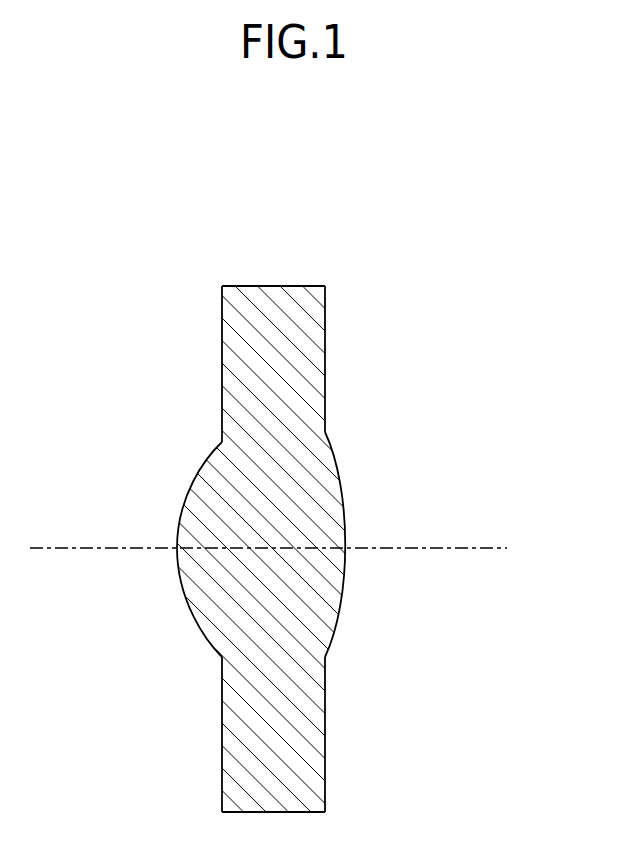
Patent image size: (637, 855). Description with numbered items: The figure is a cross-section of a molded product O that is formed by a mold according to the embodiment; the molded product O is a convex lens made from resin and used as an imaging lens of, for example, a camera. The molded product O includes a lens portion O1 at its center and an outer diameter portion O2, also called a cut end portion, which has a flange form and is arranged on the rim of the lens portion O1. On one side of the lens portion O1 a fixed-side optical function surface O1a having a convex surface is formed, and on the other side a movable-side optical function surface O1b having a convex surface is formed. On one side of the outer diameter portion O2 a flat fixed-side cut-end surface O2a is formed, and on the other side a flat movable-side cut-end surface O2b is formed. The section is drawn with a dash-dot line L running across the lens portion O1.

The molded product O is at (441, 209).
The lens portion O1 is at (369, 518).
The fixed-side optical function surface O1a is at (342, 497).
The movable-side optical function surface O1b is at (190, 487).
The outer diameter portion O2 is at (344, 316).
The fixed-side cut-end surface O2a is at (326, 363).
The movable-side cut-end surface O2b is at (222, 362).
The optical axis L is at (463, 547).